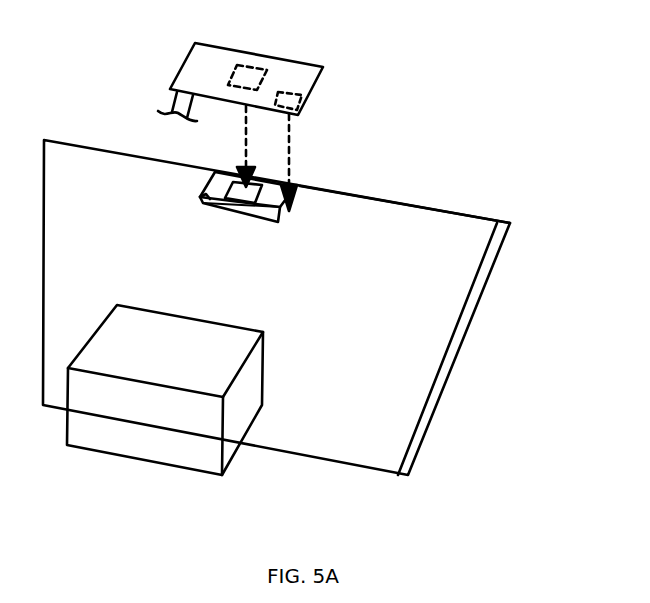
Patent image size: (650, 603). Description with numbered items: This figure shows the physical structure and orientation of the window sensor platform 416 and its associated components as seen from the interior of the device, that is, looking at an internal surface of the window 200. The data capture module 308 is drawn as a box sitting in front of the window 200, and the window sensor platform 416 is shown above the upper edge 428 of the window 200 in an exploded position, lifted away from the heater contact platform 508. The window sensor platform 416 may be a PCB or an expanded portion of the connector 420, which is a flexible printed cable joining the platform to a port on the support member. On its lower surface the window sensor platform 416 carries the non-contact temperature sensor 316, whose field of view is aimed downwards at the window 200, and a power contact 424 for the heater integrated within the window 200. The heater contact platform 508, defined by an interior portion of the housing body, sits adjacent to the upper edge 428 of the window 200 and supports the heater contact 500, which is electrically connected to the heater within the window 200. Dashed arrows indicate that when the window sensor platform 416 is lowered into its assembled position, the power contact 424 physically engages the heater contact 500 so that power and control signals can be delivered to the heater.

The window 200 is at (442, 308).
The upper edge 428 is at (410, 207).
The data capture module 308 is at (120, 420).
The heater contact 500 is at (207, 202).
The heater contact platform 508 is at (203, 192).
The window sensor platform 416 is at (185, 54).
The connector 420 is at (160, 103).
The power contact 424 is at (262, 72).
The non-contact temperature sensor 316 is at (300, 92).